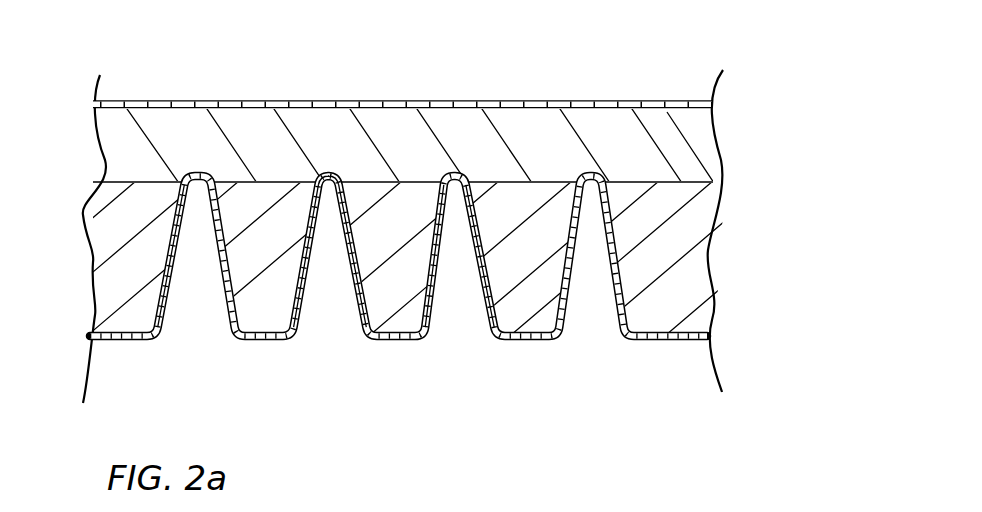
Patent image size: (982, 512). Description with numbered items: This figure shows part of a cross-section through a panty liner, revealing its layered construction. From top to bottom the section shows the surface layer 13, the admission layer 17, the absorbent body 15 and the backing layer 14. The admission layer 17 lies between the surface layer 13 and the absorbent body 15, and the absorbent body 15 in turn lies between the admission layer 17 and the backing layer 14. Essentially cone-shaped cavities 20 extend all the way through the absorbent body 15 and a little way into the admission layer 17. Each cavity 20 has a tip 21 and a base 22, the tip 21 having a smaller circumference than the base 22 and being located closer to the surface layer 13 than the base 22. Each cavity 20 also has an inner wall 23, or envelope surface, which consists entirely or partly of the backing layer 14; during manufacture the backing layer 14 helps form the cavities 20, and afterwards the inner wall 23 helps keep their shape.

The surface layer 13 is at (643, 100).
The backing layer 14 is at (657, 350).
The absorbent body 15 is at (675, 230).
The admission layer 17 is at (683, 140).
The cone-shaped cavities 20 is at (460, 326).
The tip 21 is at (328, 162).
The base 22 is at (325, 346).
The inner wall 23 is at (181, 298).